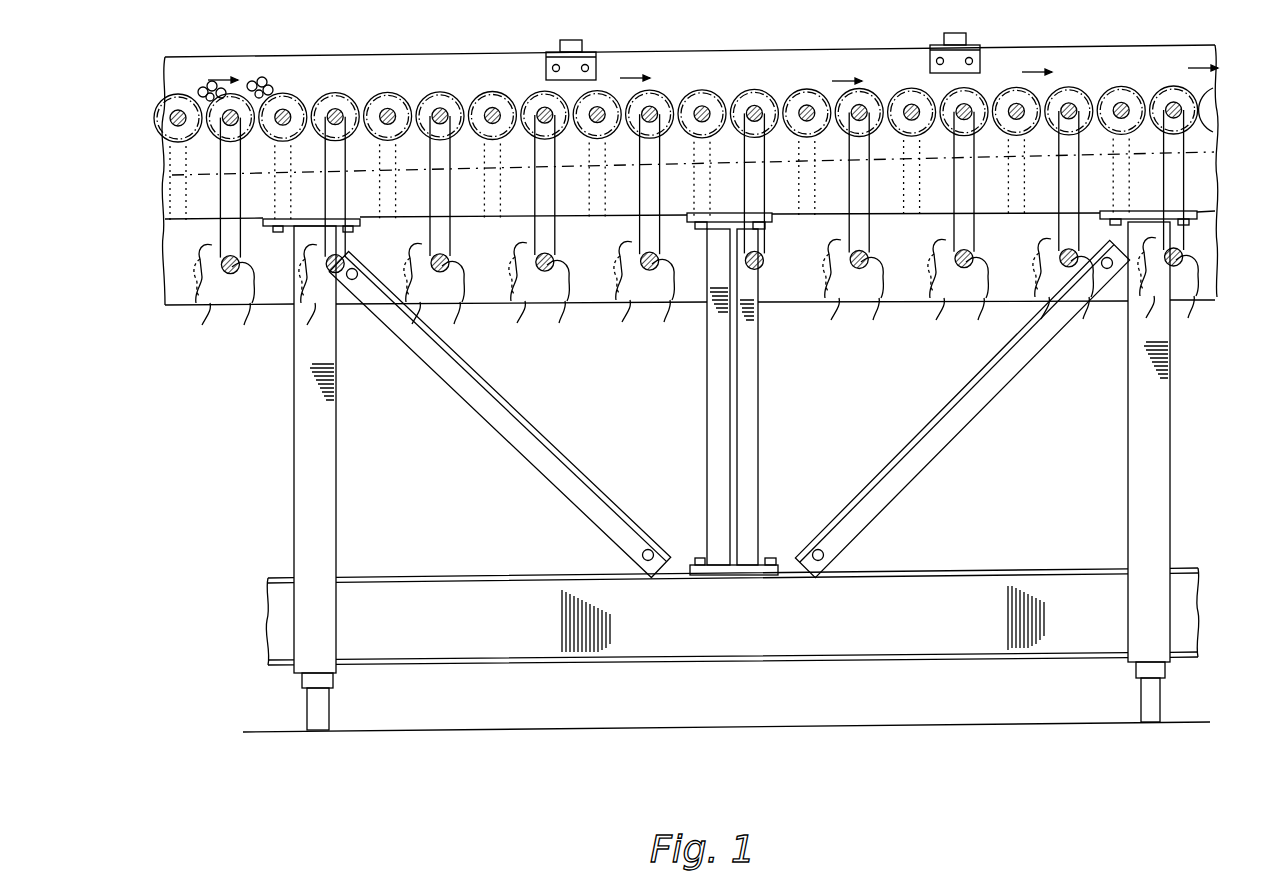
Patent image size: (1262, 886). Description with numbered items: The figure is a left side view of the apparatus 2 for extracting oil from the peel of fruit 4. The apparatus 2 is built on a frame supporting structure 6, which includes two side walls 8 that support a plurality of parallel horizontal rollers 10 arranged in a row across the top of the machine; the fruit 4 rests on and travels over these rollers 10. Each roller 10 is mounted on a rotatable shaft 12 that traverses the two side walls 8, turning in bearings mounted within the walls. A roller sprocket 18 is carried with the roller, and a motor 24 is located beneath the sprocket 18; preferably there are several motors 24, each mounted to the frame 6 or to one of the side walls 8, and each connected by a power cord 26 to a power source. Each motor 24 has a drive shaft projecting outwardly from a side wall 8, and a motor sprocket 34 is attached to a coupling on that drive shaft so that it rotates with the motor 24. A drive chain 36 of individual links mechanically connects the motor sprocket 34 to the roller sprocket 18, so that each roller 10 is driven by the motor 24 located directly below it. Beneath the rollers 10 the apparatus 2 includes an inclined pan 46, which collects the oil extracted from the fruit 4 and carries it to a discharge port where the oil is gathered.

The apparatus 2 is at (910, 676).
The fruit 4 is at (186, 100).
The frame supporting structure 6 is at (298, 522).
The side walls 8 is at (190, 300).
The rollers 10 is at (1074, 100).
The rotatable shaft 12 is at (698, 106).
The roller sprocket 18 is at (327, 108).
The motor 24 is at (671, 305).
The power cord 26 is at (1068, 326).
The motor sprocket 34 is at (244, 256).
The drive chain 36 is at (237, 159).
The inclined pan 46 is at (206, 179).